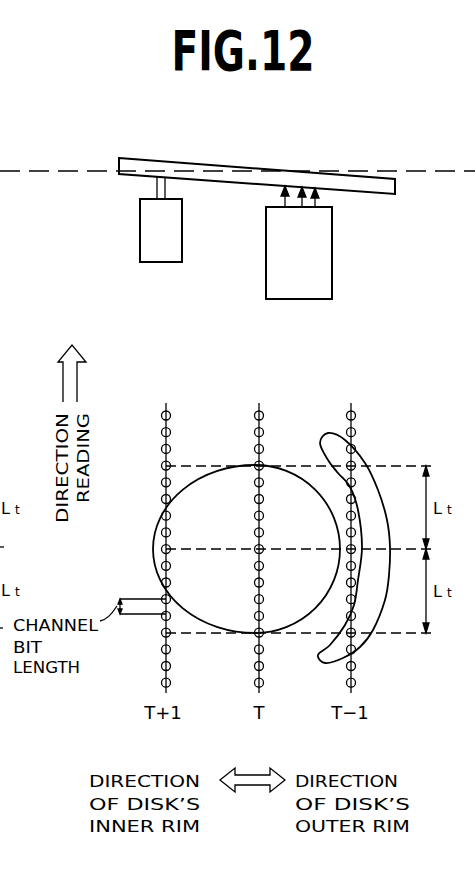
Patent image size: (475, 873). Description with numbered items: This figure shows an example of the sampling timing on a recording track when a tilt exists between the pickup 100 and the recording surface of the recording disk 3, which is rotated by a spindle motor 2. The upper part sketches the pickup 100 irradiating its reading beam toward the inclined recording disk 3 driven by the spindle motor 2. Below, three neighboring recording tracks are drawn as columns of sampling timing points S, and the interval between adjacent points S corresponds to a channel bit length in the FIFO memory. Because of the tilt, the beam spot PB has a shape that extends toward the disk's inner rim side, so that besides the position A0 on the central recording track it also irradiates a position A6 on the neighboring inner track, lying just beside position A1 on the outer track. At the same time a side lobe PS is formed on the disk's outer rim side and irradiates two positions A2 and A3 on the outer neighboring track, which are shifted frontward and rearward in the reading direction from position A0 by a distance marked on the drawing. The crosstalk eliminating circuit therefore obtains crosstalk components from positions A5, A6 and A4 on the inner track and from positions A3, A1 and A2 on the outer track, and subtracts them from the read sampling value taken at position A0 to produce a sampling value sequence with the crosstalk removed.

The spindle motor 2 is at (140, 225).
The recording disk 3 is at (273, 172).
The pickup 100 is at (266, 283).
The beam spot PB is at (203, 477).
The side lobe PS is at (326, 432).
The position A0 is at (263, 545).
The position A1 is at (346, 552).
The position A2 is at (356, 463).
The position A3 is at (356, 636).
The position A4 is at (162, 463).
The position A5 is at (170, 637).
The position A6 is at (171, 545).
The sampling timing point S is at (161, 582).